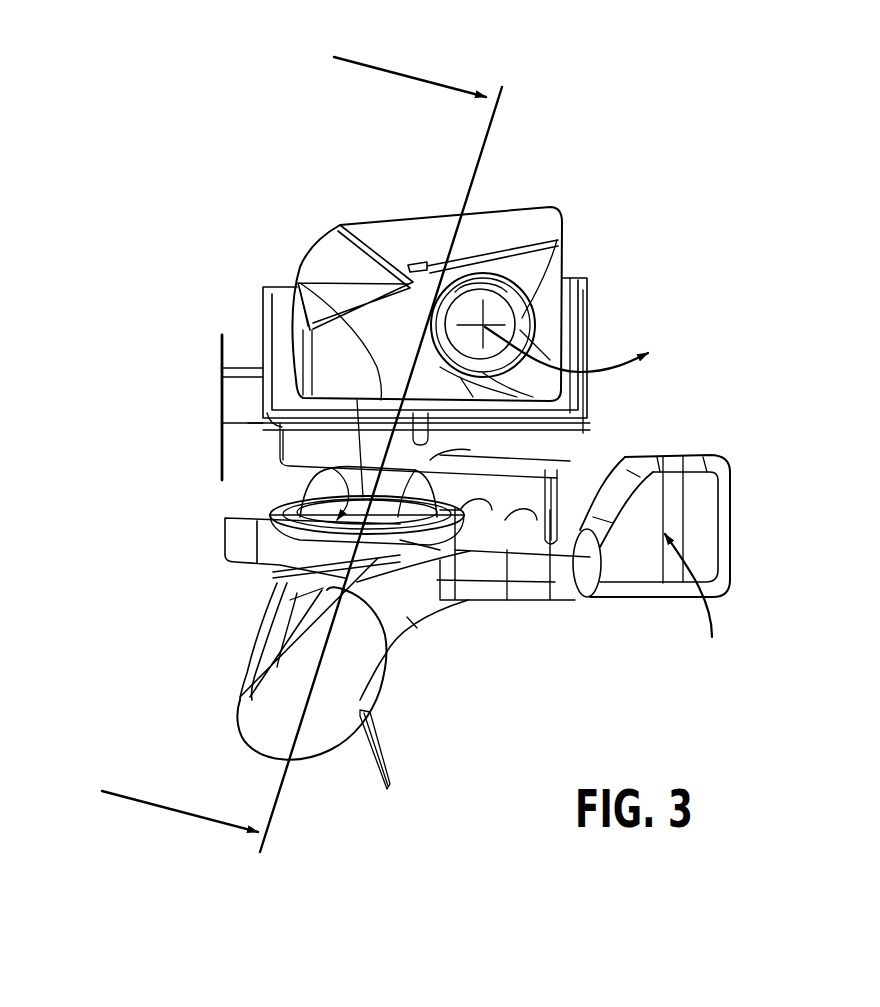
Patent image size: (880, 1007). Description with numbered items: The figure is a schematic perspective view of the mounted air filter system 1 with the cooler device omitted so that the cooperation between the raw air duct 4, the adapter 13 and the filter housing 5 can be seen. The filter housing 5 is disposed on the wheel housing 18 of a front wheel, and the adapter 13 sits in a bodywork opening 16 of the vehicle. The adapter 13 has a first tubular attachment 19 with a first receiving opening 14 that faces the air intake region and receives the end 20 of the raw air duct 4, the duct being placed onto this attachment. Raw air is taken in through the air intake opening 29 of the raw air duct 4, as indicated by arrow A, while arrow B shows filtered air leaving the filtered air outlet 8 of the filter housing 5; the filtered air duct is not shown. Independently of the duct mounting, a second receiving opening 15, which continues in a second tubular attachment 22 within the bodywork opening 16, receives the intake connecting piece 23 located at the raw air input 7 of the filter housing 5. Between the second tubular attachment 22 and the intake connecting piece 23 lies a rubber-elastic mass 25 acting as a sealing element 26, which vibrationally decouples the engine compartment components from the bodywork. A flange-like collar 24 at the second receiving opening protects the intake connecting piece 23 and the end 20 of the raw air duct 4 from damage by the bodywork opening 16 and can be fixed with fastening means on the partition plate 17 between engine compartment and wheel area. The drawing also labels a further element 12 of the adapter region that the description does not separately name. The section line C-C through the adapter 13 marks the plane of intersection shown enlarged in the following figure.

The air filter system 1 is at (690, 106).
The raw air duct 4 is at (410, 620).
The filter housing 5 is at (412, 214).
The raw air input 7 is at (321, 471).
The filtered air outlet 8 is at (503, 307).
The base platform 12 is at (240, 543).
The adapter 13 is at (297, 582).
The first receiving opening 14 is at (268, 592).
The second receiving opening 15 is at (432, 536).
The bodywork opening 16 is at (300, 468).
The partition plate 17 is at (507, 555).
The wheel housing 18 is at (248, 402).
The first tubular attachment 19 is at (257, 660).
The end of the raw air duct 20 is at (385, 660).
The second tubular attachment 22 is at (268, 576).
The intake connecting piece 23 is at (380, 398).
The flange-like collar 24 is at (292, 507).
The rubber-elastic mass 25 is at (482, 467).
The sealing element 26 is at (565, 461).
The air intake opening 29 is at (705, 489).